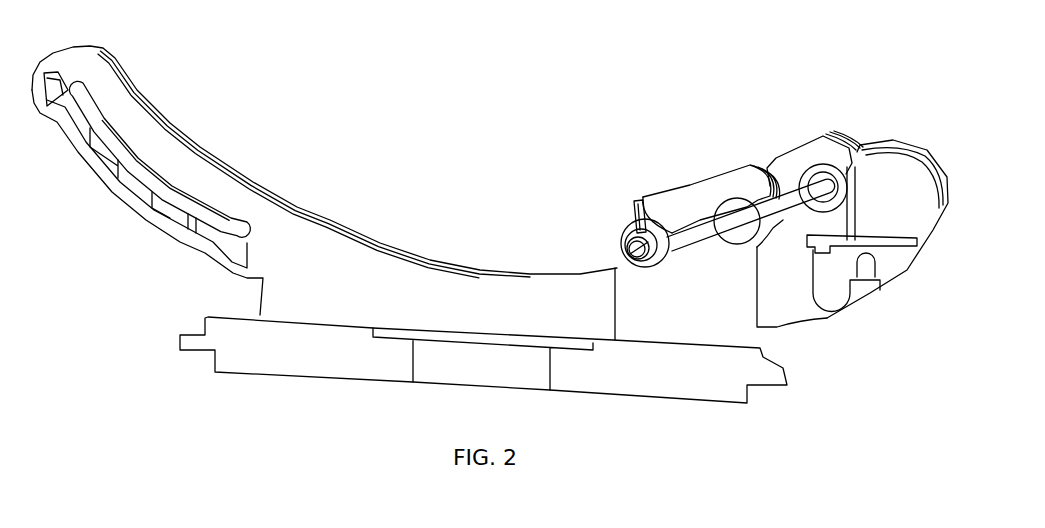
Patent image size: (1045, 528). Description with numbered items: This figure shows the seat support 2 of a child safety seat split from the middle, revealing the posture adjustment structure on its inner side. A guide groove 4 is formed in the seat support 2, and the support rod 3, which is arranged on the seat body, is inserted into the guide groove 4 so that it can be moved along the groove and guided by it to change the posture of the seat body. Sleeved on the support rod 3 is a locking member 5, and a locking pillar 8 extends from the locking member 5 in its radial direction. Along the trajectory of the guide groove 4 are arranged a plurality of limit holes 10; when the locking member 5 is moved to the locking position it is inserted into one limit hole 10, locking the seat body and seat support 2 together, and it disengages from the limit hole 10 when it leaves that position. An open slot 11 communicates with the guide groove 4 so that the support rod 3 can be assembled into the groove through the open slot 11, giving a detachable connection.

The seat support 2 is at (357, 265).
The support rod 3 is at (625, 250).
The guide groove 4 is at (693, 233).
The locking member 5 is at (633, 245).
The locking pillar 8 is at (633, 228).
The limit hole 10 is at (725, 207).
The open slot 11 is at (763, 167).